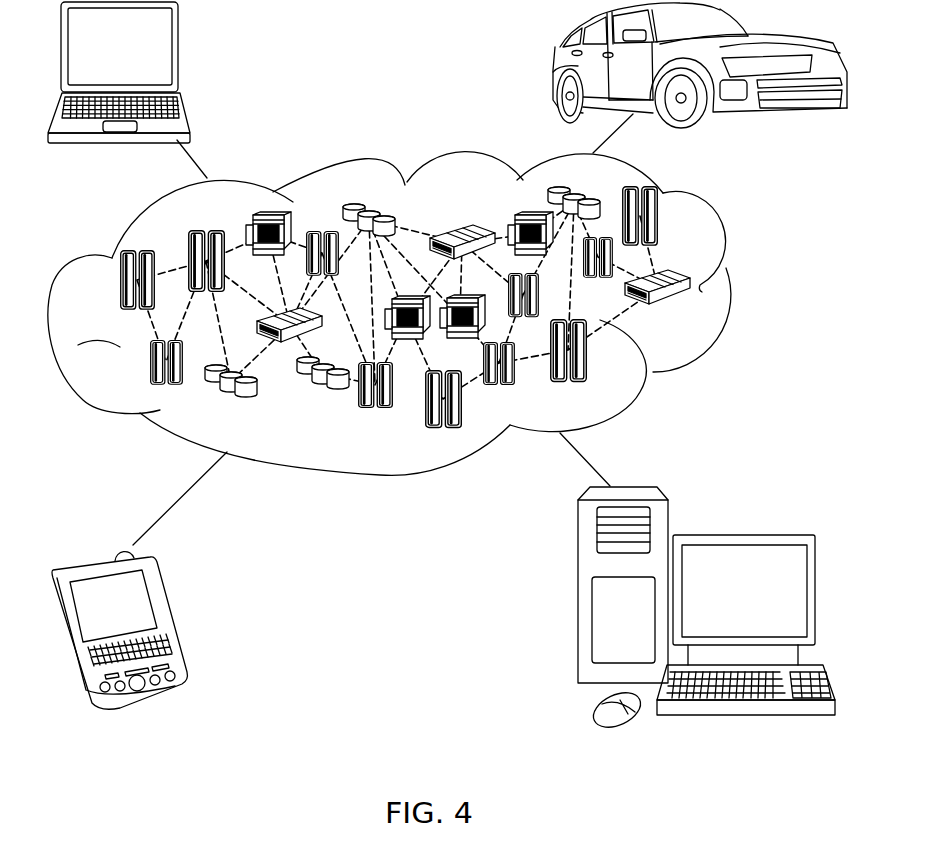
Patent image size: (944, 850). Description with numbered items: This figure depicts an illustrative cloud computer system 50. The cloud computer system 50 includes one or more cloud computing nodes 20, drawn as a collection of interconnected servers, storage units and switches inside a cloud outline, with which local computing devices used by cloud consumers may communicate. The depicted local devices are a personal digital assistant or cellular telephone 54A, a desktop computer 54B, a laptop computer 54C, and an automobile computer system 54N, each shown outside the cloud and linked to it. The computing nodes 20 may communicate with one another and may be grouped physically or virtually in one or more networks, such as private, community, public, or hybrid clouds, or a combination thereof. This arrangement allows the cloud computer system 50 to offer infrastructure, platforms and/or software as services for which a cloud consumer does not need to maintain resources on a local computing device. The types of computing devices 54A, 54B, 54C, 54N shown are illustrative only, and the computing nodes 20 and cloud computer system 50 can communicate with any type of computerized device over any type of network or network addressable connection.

The cloud computer system 50 is at (422, 314).
The cloud computing nodes 20 is at (692, 315).
The personal digital assistant or cellular telephone 54A is at (173, 618).
The desktop computer 54B is at (742, 535).
The laptop computer 54C is at (180, 57).
The automobile computer system 54N is at (553, 68).